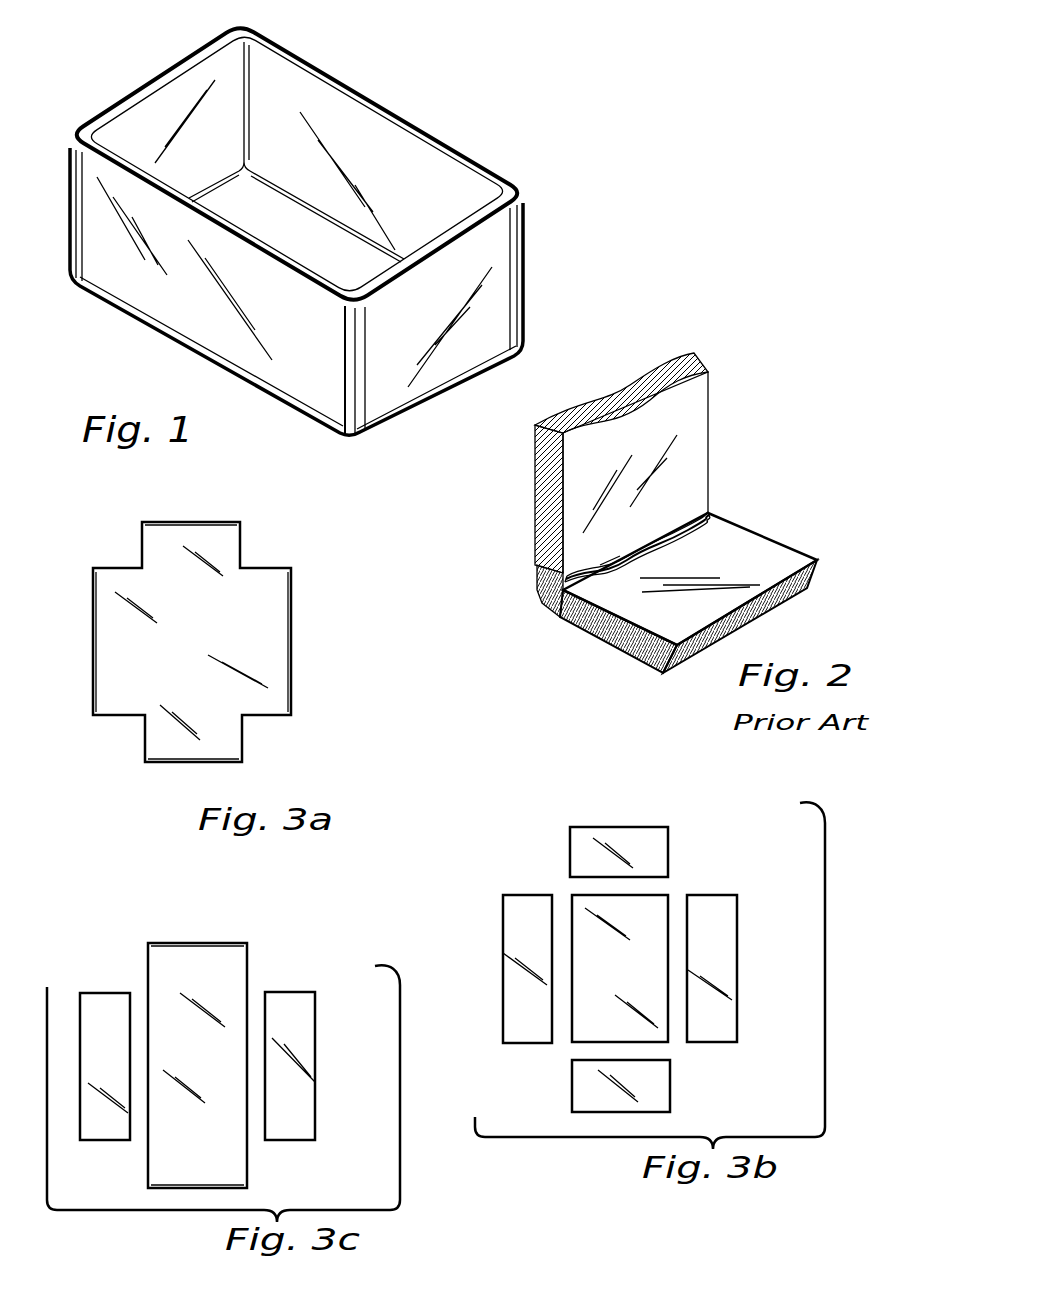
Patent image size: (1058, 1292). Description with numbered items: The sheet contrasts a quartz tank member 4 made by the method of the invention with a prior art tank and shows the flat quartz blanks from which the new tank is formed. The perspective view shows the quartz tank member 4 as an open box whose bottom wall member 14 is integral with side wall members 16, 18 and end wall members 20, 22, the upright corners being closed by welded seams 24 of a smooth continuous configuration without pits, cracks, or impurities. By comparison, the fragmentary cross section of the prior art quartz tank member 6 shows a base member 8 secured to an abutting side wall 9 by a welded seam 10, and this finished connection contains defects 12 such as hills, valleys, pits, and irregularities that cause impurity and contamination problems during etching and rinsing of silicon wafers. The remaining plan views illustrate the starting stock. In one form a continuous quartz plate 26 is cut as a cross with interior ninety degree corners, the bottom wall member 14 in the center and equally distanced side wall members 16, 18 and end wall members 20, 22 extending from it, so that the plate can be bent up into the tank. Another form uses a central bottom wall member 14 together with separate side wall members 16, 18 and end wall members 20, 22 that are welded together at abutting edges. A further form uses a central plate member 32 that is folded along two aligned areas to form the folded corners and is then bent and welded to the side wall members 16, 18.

In FIG. 1, the quartz tank member 4 is at (365, 229).
In FIG. 2, the prior art quartz tank member 6 is at (714, 508).
In FIG. 2, the base member 8 is at (733, 598).
In FIG. 2, the side wall 9 is at (688, 475).
In FIG. 2, the welded seam 10 is at (667, 550).
In FIG. 2, the defects 12 is at (667, 562).
In FIG. 1, the bottom wall member 14 is at (358, 263).
In FIG. 3A, the bottom wall member 14 is at (157, 651).
In FIG. 3B, the bottom wall member 14 is at (582, 966).
In FIG. 3C, the bottom wall member 14 is at (165, 1051).
In FIG. 1, the side wall member 16 is at (252, 318).
In FIG. 3A, the side wall member 16 is at (107, 676).
In FIG. 3B, the side wall member 16 is at (510, 973).
In FIG. 3C, the side wall member 16 is at (117, 1042).
In FIG. 3A, the side wall member 18 is at (277, 630).
In FIG. 3B, the side wall member 18 is at (710, 968).
In FIG. 3C, the side wall member 18 is at (295, 1102).
In FIG. 1, the end wall member 20 is at (200, 43).
In FIG. 3A, the end wall member 20 is at (193, 538).
In FIG. 3B, the end wall member 20 is at (627, 852).
In FIG. 3C, the end wall member 20 is at (202, 965).
In FIG. 1, the end wall member 22 is at (478, 242).
In FIG. 3A, the end wall member 22 is at (180, 742).
In FIG. 3B, the end wall member 22 is at (623, 1092).
In FIG. 3C, the end wall member 22 is at (190, 1158).
In FIG. 1, the welded seams 24 is at (240, 88).
In FIG. 3A, the quartz plate 26 is at (257, 593).
In FIG. 3C, the central plate member 32 is at (180, 995).